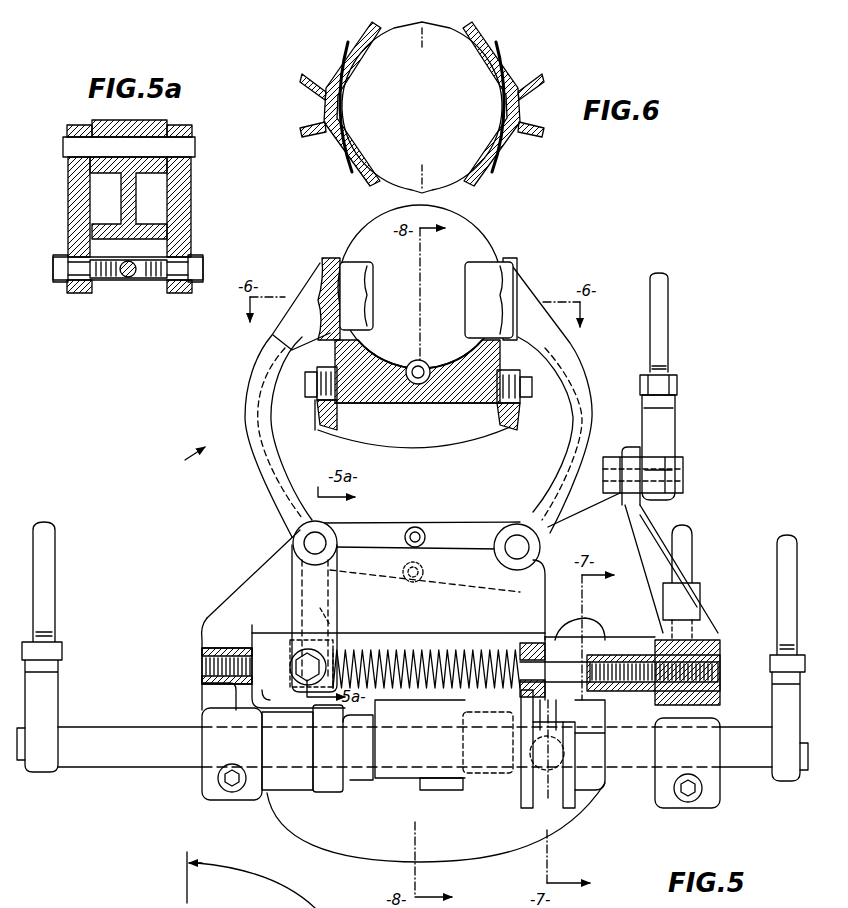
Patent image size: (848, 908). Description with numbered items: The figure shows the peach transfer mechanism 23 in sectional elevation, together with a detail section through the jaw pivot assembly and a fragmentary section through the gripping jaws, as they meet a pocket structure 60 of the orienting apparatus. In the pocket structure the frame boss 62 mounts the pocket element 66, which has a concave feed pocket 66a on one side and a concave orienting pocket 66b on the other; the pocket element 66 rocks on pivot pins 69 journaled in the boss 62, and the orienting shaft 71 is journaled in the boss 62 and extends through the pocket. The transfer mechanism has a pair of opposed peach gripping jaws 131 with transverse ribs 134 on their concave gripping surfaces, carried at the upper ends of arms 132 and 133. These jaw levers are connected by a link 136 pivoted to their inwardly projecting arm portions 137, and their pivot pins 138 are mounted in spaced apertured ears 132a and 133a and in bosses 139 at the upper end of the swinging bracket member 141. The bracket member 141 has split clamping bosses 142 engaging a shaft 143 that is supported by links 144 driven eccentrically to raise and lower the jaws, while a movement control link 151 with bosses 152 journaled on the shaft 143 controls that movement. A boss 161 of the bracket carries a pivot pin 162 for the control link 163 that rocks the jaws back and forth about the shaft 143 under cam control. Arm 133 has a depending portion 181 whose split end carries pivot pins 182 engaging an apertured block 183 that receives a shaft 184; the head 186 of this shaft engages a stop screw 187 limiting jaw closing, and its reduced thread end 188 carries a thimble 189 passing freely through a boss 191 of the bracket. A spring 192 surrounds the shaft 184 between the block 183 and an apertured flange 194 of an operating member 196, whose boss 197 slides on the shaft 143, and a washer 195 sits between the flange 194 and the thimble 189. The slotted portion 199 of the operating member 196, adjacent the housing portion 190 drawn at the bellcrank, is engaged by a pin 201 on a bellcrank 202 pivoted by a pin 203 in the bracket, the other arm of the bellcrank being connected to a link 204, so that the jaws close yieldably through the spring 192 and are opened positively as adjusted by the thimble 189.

In FIG. 5, the clamp assembly 23 is at (183, 459).
In FIG. 5, the pocket structure 60 is at (482, 445).
In FIG. 5, the boss 62 is at (320, 428).
In FIG. 5, the pocket element 66 is at (418, 402).
In FIG. 5, the feed pocket 66a is at (383, 404).
In FIG. 5, the orienting pocket 66b is at (376, 360).
In FIG. 5, the pivot pins 69 is at (318, 400).
In FIG. 5, the shaft 71 is at (424, 384).
In FIG. 6, the peach gripping jaws 131 is at (343, 62).
In FIG. 5, the peach gripping jaws 131 is at (328, 270).
In FIG. 5, the arm 132 is at (585, 430).
In FIG. 5, the apertured ears 132a is at (515, 580).
In FIG. 5, the arm 133 is at (268, 489).
In FIG. 5A, the apertured ears 133a is at (72, 125).
In FIG. 5, the apertured ears 133a is at (292, 560).
In FIG. 6, the transverse ribs 134 is at (340, 118).
In FIG. 5, the transverse ribs 134 is at (340, 312).
In FIG. 5, the link 136 is at (408, 530).
In FIG. 5, the arm portions 137 is at (490, 522).
In FIG. 5A, the pivot pins 138 is at (190, 148).
In FIG. 5, the pivot pins 138 is at (304, 544).
In FIG. 5A, the bosses 139 is at (142, 120).
In FIG. 5, the swinging bracket member 141 is at (205, 620).
In FIG. 5, the split clamping bosses 142 is at (202, 790).
In FIG. 5, the shaft 143 is at (118, 757).
In FIG. 5, the links 144 is at (52, 577).
In FIG. 5, the movement control link 151 is at (358, 848).
In FIG. 5, the bosses 152 is at (272, 790).
In FIG. 5, the boss 161 is at (628, 452).
In FIG. 5, the pivot pin 162 is at (678, 478).
In FIG. 5, the control link 163 is at (675, 345).
In FIG. 5A, the depending portion 181 is at (70, 178).
In FIG. 5, the depending portion 181 is at (338, 612).
In FIG. 5A, the pivot pins 182 is at (60, 260).
In FIG. 5, the pivot pins 182 is at (295, 660).
In FIG. 5A, the apertured block 183 is at (140, 282).
In FIG. 5, the apertured block 183 is at (296, 620).
In FIG. 5A, the shaft 184 is at (122, 278).
In FIG. 5, the shaft 184 is at (380, 650).
In FIG. 5, the head 186 is at (272, 695).
In FIG. 5, the stop screw 187 is at (252, 640).
In FIG. 5, the reduced thread end 188 is at (630, 690).
In FIG. 5, the thimble 189 is at (635, 636).
In FIG. 5, the housing 190 is at (582, 785).
In FIG. 5, the boss 191 is at (718, 632).
In FIG. 5, the spring 192 is at (465, 650).
In FIG. 5, the apertured flange 194 is at (530, 640).
In FIG. 5, the washer 195 is at (542, 688).
In FIG. 5, the operating member 196 is at (452, 778).
In FIG. 5, the boss 197 is at (358, 792).
In FIG. 5, the slotted portion 199 is at (555, 800).
In FIG. 5, the pin 201 is at (518, 728).
In FIG. 5, the bellcrank 202 is at (575, 740).
In FIG. 5, the pin 203 is at (590, 640).
In FIG. 5, the link 204 is at (688, 553).